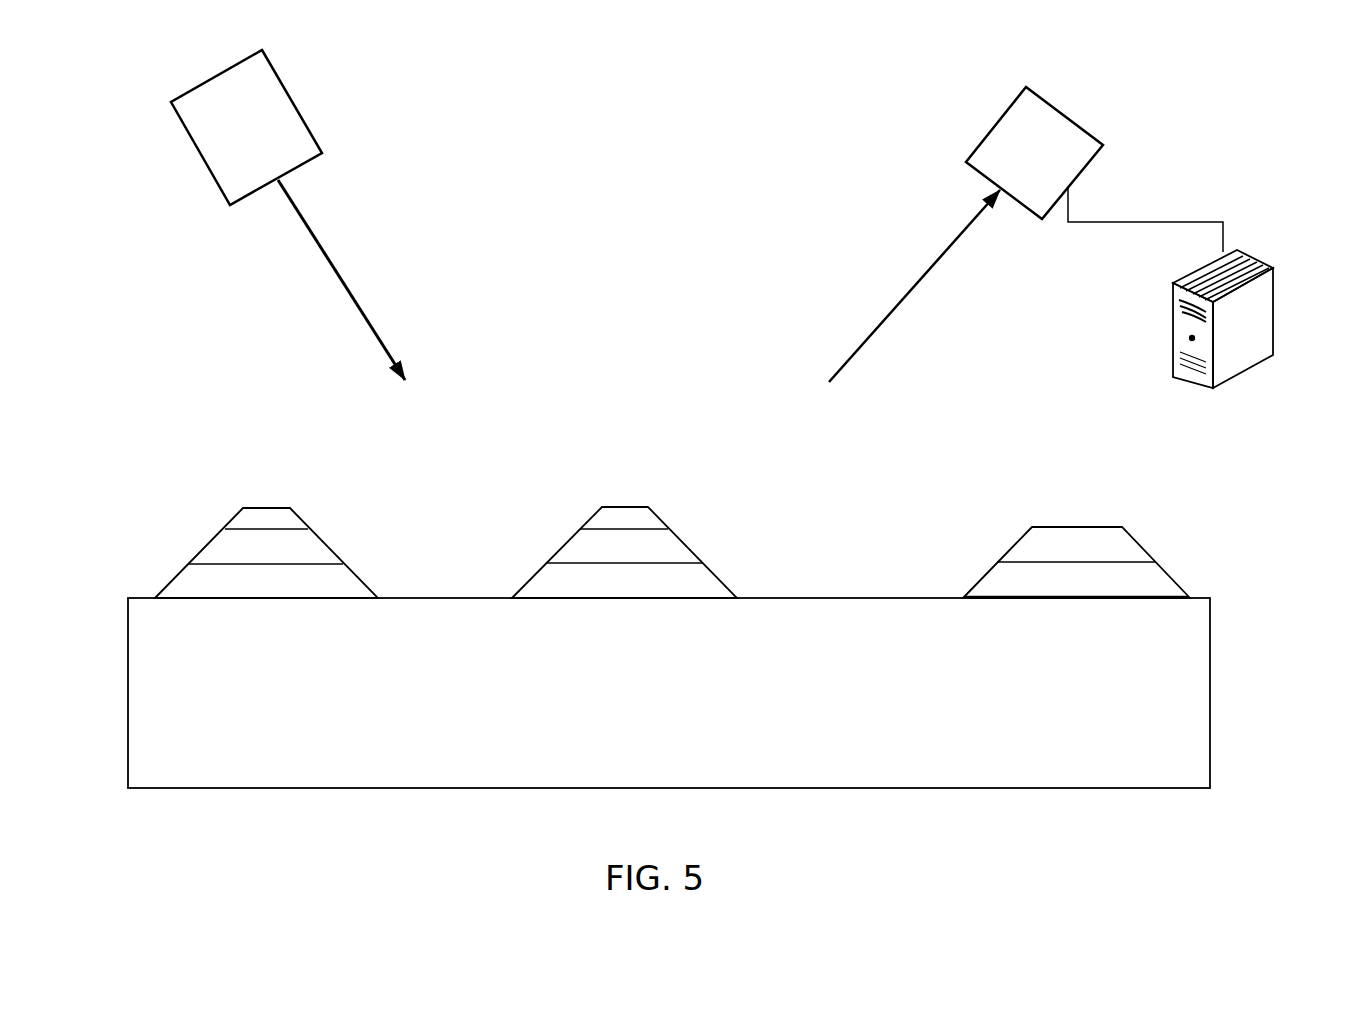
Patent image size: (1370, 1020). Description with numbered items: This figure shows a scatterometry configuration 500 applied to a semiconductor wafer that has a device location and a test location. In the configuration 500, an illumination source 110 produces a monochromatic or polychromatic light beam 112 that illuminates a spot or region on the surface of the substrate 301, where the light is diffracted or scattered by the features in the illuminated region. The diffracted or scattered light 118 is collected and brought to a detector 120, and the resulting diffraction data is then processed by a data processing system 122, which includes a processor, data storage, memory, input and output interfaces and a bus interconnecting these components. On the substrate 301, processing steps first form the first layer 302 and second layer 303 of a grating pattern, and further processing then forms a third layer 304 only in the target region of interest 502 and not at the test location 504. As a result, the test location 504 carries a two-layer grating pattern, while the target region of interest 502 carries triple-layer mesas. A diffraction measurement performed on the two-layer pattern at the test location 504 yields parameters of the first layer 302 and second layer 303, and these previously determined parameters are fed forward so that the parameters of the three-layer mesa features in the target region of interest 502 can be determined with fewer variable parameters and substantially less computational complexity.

The illumination source 110 is at (246, 127).
The light beam 112 is at (354, 280).
The diffracted or scattered light 118 is at (914, 286).
The detector 120 is at (1094, 169).
The data processing system 122 is at (1254, 319).
The substrate 301 is at (669, 693).
The first layer 302 is at (655, 553).
The second layer 303 is at (660, 544).
The third layer 304 is at (445, 518).
The configuration 500 is at (1143, 888).
The target region of interest 502 is at (656, 466).
The test location 504 is at (1142, 483).